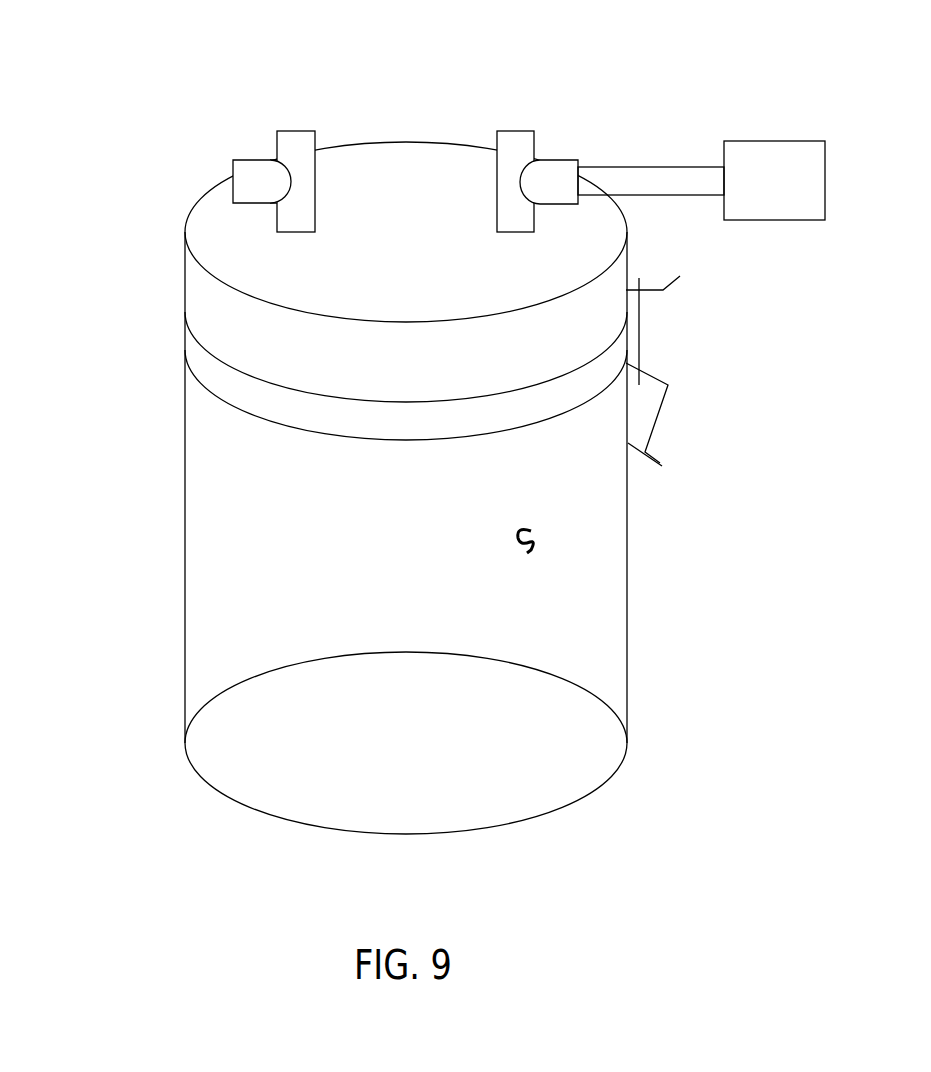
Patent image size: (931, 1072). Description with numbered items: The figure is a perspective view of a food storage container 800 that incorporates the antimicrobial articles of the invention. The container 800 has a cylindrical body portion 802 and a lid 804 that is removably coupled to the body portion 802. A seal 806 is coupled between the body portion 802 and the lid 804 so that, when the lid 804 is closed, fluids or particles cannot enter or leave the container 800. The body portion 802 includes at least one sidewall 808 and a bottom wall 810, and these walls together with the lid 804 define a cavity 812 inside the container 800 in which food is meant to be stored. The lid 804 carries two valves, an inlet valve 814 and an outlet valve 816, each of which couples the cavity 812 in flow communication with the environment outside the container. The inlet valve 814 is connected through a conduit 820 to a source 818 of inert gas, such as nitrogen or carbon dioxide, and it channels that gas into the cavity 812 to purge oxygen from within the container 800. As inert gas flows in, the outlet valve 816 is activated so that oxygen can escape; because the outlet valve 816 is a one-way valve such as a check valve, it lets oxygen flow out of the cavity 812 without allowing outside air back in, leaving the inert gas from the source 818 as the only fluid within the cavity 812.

The storage container 800 is at (137, 140).
The body portion 802 is at (627, 630).
The lid 804 is at (207, 235).
The seal 806 is at (213, 372).
The sidewall 808 is at (218, 508).
The bottom wall 810 is at (530, 792).
The cavity 812 is at (535, 543).
The inlet valve 814 is at (525, 131).
The outlet valve 816 is at (292, 130).
The source of inert gas 818 is at (795, 194).
The conduit 820 is at (625, 165).